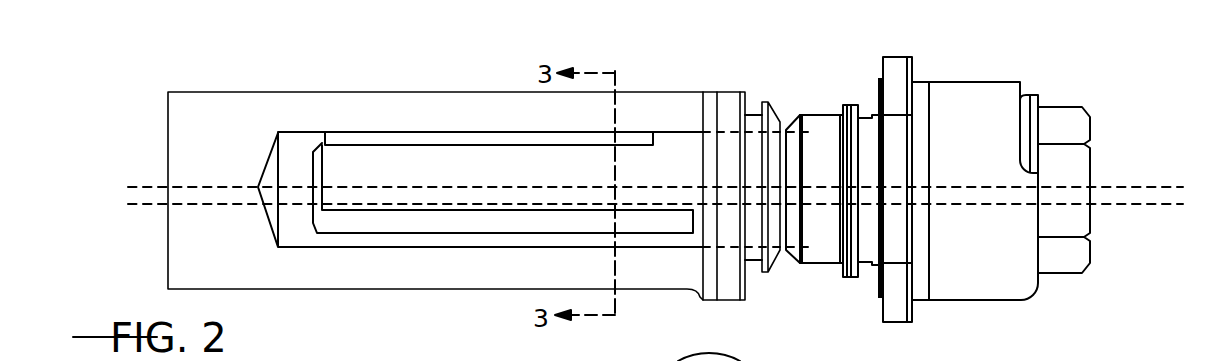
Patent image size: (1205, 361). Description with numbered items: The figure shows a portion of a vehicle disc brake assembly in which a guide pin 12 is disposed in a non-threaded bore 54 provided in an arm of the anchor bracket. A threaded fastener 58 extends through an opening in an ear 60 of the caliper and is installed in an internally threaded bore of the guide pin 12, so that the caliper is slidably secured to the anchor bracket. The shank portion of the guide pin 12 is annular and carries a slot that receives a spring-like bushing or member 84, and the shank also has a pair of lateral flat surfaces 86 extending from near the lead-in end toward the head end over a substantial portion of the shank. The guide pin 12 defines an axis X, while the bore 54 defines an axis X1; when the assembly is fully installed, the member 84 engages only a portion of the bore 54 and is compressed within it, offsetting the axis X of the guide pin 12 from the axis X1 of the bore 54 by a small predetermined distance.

The guide pin 12 is at (812, 98).
The non-threaded bore 54 is at (289, 129).
The threaded fastener 58 is at (1057, 104).
The ear 60 is at (962, 80).
The spring-like member 84 is at (380, 135).
The lateral flat surface 86 is at (437, 222).
The second axis X is at (1133, 205).
The axis of the bore X1 is at (145, 185).